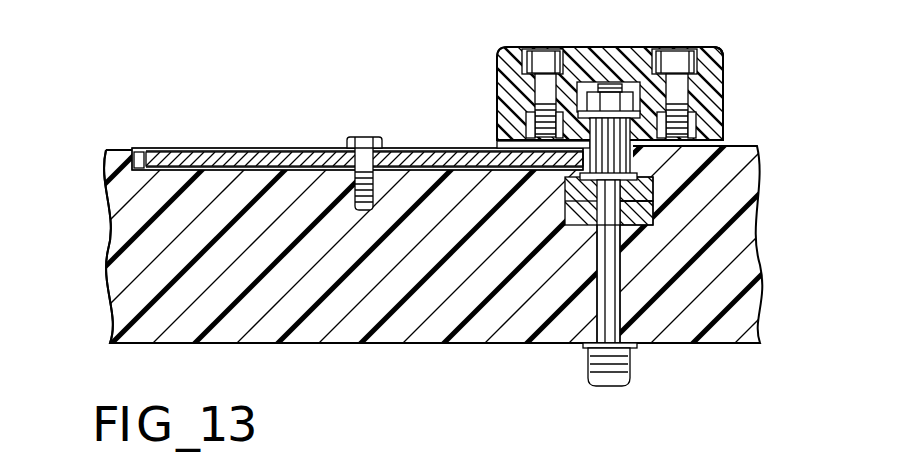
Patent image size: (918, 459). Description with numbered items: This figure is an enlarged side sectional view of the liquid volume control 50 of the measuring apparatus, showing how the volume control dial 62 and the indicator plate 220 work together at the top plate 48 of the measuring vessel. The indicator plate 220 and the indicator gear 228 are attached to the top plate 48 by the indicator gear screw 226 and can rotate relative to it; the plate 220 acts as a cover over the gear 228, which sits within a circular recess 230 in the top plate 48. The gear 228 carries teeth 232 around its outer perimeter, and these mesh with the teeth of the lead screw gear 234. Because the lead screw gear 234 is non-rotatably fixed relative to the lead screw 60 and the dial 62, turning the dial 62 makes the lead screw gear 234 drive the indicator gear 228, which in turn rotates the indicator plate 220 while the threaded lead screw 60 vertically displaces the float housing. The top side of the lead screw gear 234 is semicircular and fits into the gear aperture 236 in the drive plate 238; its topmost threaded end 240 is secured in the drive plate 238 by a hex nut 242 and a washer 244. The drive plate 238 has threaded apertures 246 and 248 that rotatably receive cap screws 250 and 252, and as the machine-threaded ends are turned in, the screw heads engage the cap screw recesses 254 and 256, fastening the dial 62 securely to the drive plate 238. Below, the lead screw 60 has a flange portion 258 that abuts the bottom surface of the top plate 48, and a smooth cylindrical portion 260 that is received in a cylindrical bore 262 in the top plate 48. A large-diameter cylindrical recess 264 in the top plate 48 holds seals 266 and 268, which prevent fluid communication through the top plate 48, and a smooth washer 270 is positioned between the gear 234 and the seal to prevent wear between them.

The top plate 48 is at (127, 318).
The liquid volume control 50 is at (384, 84).
The lead screw 60 is at (632, 372).
The volume control dial 62 is at (497, 134).
The indicator plate 220 is at (167, 152).
The indicator gear screw 226 is at (364, 136).
The indicator gear 228 is at (135, 187).
The circular recess 230 is at (141, 152).
The teeth 232 is at (118, 162).
The lead screw gear 234 is at (752, 147).
The gear aperture 236 is at (383, 344).
The drive plate 238 is at (640, 100).
The threaded end 240 is at (568, 47).
The hex nut 242 is at (634, 112).
The washer 244 is at (622, 82).
The threaded aperture 246 is at (528, 125).
The threaded aperture 248 is at (692, 120).
The cap screw 250 is at (512, 80).
The cap screw 252 is at (722, 66).
The cap screw recess 254 is at (524, 64).
The cap screw recess 256 is at (702, 46).
The flange portion 258 is at (645, 346).
The smooth cylindrical portion 260 is at (587, 345).
The cylindrical bore 262 is at (604, 285).
The cylindrical recess 264 is at (640, 227).
The seal 266 is at (653, 192).
The seal 268 is at (653, 214).
The smooth washer 270 is at (640, 176).